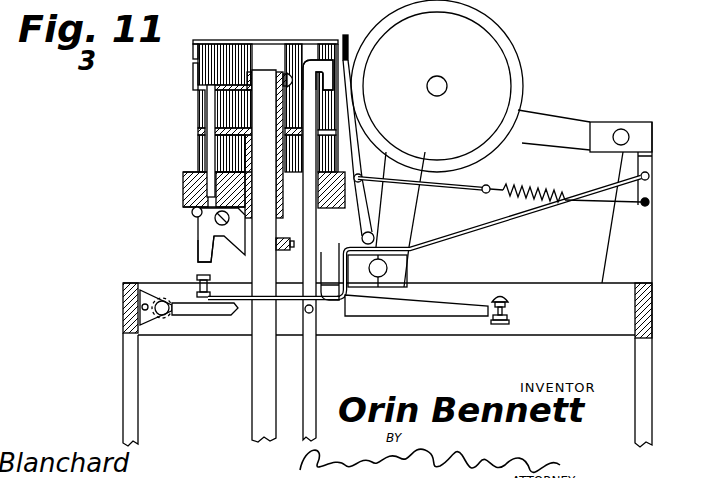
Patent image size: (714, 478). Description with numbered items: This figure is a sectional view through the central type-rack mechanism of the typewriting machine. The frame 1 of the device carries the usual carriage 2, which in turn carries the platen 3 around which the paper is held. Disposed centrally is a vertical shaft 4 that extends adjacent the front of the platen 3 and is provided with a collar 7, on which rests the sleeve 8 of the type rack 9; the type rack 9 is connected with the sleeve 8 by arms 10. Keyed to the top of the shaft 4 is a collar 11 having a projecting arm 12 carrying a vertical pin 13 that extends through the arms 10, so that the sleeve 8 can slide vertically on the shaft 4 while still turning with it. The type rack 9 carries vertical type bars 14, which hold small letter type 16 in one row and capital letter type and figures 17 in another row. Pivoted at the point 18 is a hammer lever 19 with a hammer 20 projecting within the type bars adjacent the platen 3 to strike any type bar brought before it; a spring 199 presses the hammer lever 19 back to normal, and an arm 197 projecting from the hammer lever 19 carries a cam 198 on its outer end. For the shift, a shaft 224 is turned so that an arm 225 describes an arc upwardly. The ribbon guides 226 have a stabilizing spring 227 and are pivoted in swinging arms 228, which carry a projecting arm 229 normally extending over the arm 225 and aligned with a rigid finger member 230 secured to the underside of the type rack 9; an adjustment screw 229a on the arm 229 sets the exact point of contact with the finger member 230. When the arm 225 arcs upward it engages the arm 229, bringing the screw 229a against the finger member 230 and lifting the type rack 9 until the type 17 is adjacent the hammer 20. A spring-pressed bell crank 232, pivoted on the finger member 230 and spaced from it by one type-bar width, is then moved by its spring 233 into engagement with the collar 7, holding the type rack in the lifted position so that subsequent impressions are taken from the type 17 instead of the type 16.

The frame 1 is at (126, 366).
The carriage 2 is at (621, 129).
The platen 3 is at (480, 40).
The vertical shaft 4 is at (262, 70).
The collar 7 is at (284, 251).
The sleeve 8 is at (281, 176).
The type rack 9 is at (183, 187).
The arms 10 is at (228, 165).
The collar 11 is at (284, 42).
The projecting arm 12 is at (231, 40).
The vertical pin 13 is at (212, 104).
The type bars 14 is at (197, 40).
The small letter type 16 is at (192, 50).
The capital letter type and figures 17 is at (192, 72).
The pivot 18 is at (310, 313).
The hammer lever 19 is at (308, 396).
The hammer 20 is at (320, 42).
The arm 197 is at (425, 302).
The cam 198 is at (500, 325).
The spring 199 is at (327, 268).
The shaft 224 is at (163, 316).
The arm 225 is at (218, 310).
The ribbon guides 226 is at (356, 164).
The stabilizing spring 227 is at (537, 194).
The swinging arms 228 is at (486, 224).
The projecting arm 229 is at (340, 301).
The adjustment screw 229a is at (197, 292).
The finger member 230 is at (195, 237).
The bell crank 232 is at (200, 250).
The spring 233 is at (196, 213).